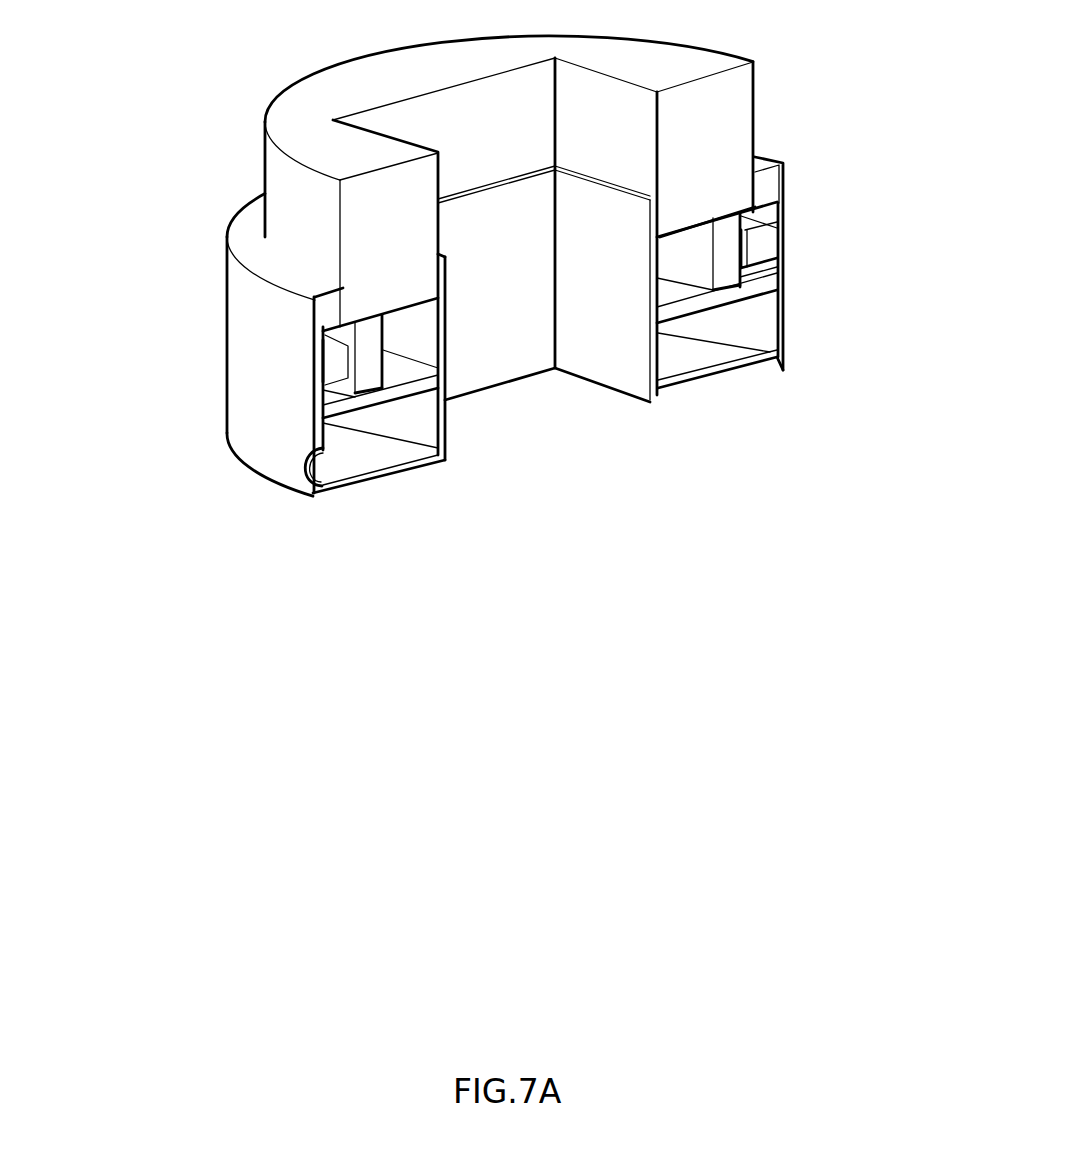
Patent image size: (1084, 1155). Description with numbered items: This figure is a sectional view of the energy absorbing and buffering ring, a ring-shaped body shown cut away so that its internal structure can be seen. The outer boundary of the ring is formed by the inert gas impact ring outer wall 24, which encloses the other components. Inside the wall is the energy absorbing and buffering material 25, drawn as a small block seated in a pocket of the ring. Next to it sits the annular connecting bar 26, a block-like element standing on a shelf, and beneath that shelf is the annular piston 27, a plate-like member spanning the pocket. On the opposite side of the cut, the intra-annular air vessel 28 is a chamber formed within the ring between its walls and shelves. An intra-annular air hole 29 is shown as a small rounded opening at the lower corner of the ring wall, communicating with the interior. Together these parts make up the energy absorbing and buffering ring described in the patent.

The inert gas impact ring outer wall 24 is at (445, 435).
The energy absorbing and buffering material 25 is at (335, 367).
The annular connecting bar 26 is at (368, 330).
The annular piston 27 is at (333, 409).
The intra-annular air vessel 28 is at (703, 352).
The intra-annular air hole 29 is at (312, 472).